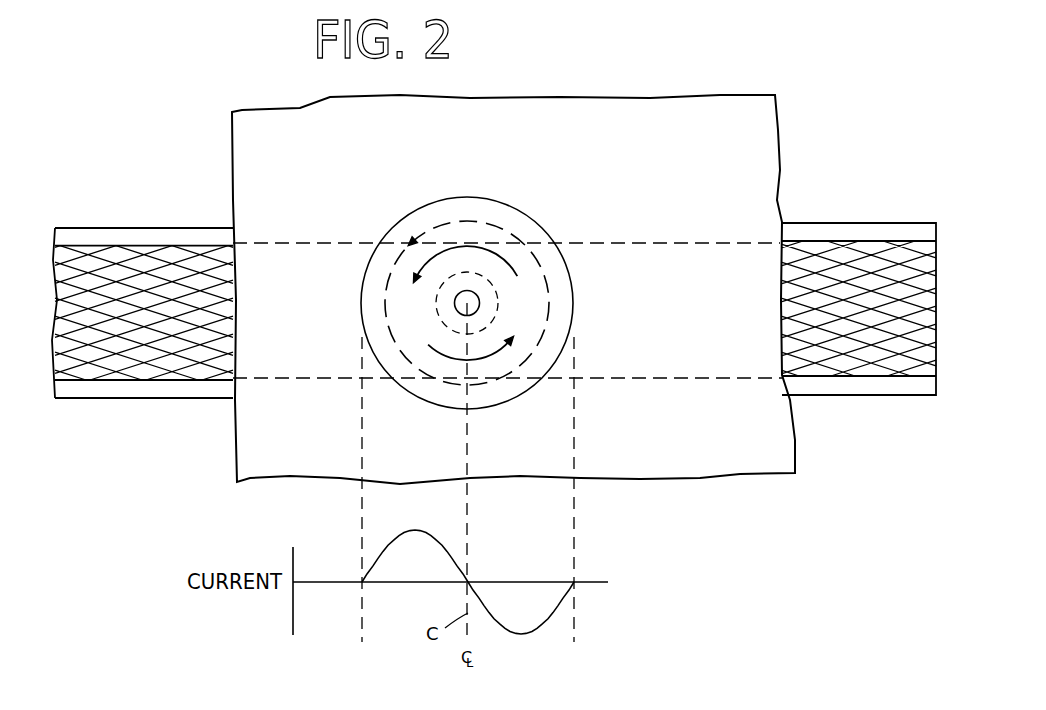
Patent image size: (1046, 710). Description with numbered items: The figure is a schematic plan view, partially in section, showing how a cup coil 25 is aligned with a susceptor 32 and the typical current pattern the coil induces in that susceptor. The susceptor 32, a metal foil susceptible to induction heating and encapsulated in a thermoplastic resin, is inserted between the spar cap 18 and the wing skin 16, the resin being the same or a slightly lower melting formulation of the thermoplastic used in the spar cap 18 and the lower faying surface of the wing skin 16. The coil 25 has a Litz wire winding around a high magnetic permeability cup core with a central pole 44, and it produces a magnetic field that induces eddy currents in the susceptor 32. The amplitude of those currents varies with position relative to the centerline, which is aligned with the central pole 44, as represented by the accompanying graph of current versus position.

The wing skin 16 is at (770, 475).
The spar cap 18 is at (886, 397).
The susceptor 32 is at (163, 257).
The coil 25 is at (429, 401).
The central pole 44 is at (497, 290).